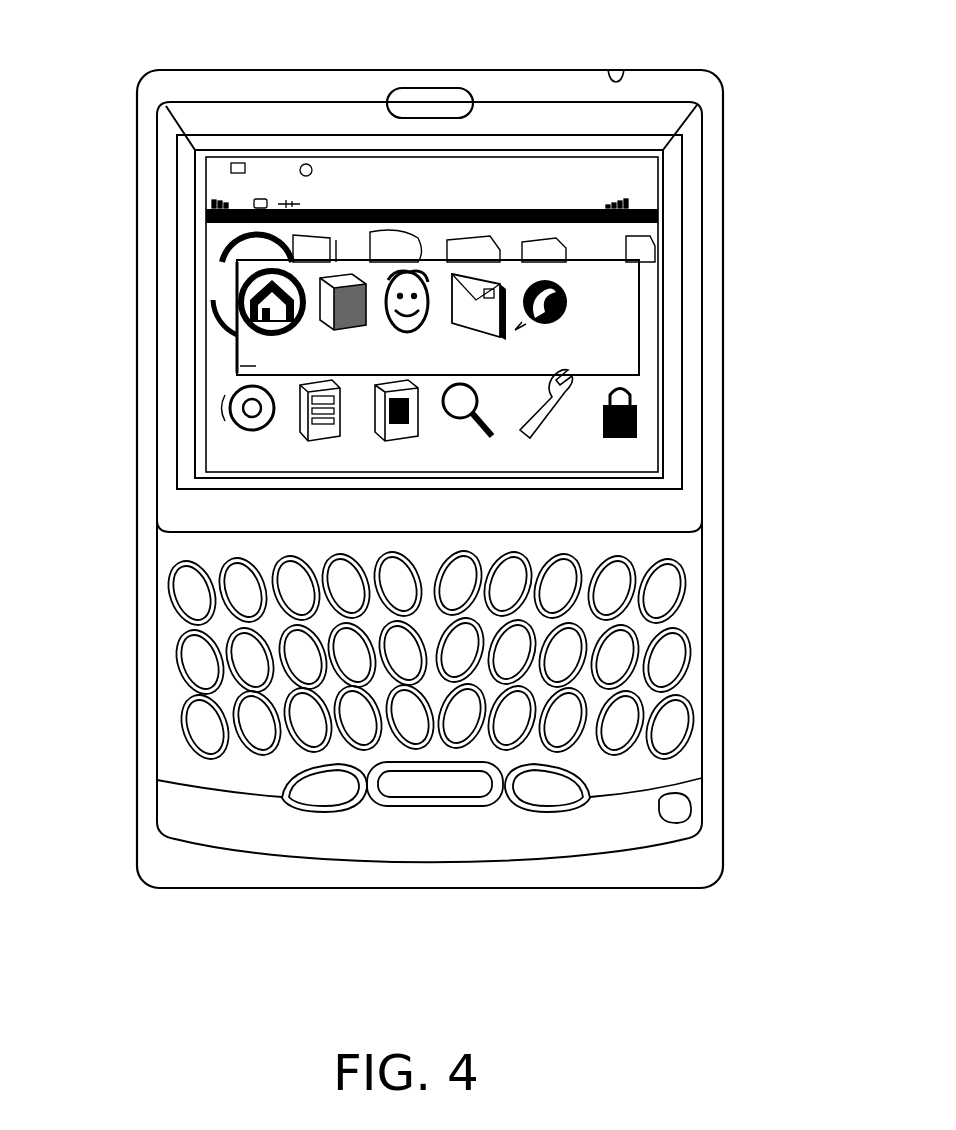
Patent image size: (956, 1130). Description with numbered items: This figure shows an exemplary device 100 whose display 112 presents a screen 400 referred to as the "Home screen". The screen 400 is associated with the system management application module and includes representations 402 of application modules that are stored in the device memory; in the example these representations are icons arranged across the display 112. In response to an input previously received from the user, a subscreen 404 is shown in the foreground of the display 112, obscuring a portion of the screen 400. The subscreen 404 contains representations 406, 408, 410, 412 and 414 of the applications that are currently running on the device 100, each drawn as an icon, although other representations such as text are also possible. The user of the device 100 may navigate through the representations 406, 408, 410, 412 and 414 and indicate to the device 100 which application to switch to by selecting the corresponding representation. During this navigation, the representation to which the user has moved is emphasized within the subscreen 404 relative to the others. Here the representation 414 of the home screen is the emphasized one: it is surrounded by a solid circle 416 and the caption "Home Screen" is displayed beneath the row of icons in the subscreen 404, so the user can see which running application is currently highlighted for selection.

The device 100 is at (725, 125).
The display 112 is at (663, 175).
The screen 400 is at (521, 205).
The representations of application modules 402 is at (475, 441).
The subscreen 404 is at (605, 282).
The representation of running application 406 is at (570, 302).
The representation of running application 408 is at (500, 337).
The representation of running application 410 is at (430, 332).
The representation of running application 412 is at (362, 278).
The representation of home screen 414 is at (301, 275).
The solid circle 416 is at (255, 282).